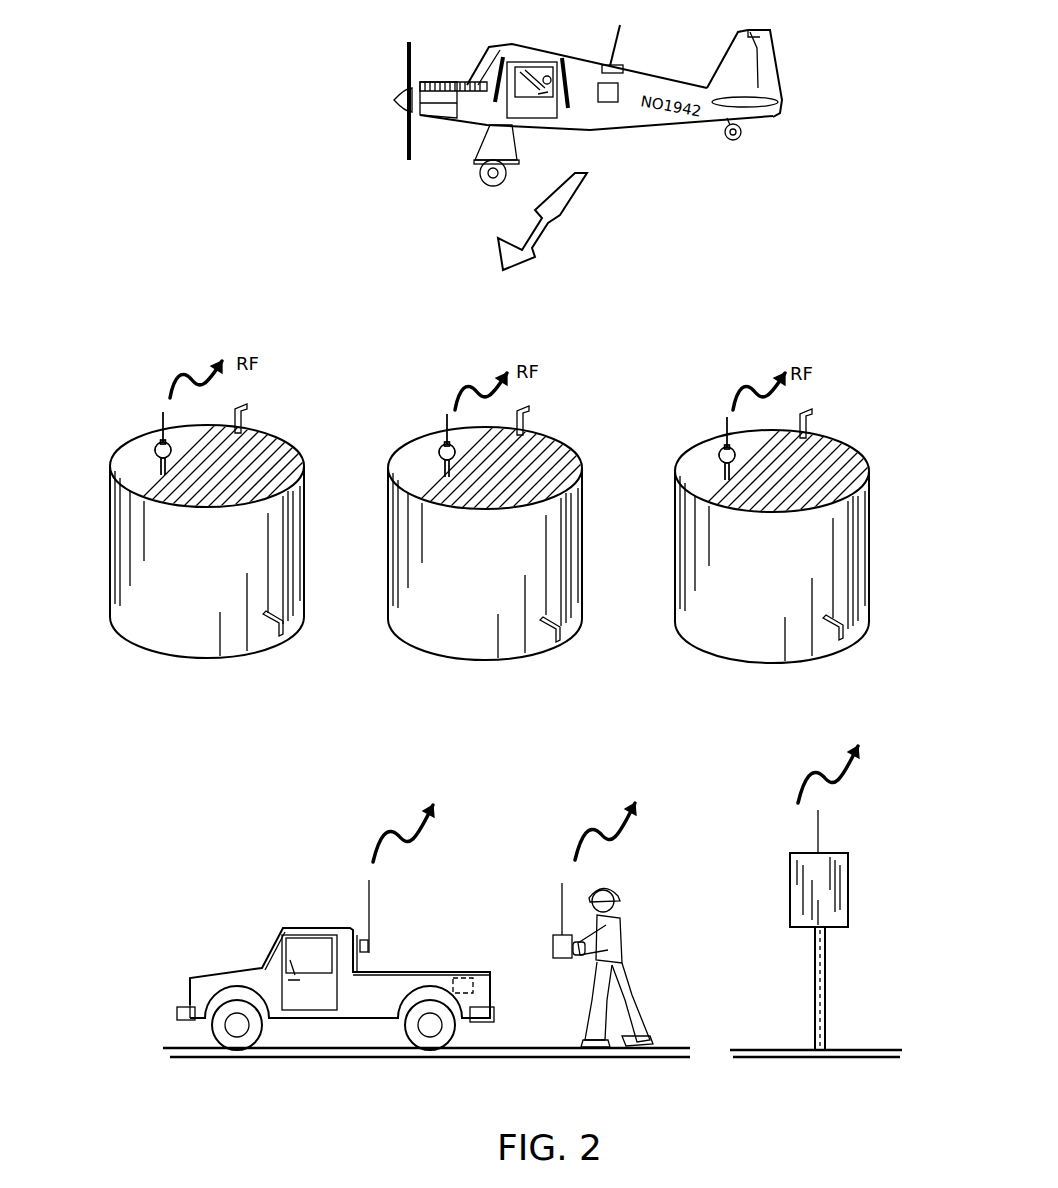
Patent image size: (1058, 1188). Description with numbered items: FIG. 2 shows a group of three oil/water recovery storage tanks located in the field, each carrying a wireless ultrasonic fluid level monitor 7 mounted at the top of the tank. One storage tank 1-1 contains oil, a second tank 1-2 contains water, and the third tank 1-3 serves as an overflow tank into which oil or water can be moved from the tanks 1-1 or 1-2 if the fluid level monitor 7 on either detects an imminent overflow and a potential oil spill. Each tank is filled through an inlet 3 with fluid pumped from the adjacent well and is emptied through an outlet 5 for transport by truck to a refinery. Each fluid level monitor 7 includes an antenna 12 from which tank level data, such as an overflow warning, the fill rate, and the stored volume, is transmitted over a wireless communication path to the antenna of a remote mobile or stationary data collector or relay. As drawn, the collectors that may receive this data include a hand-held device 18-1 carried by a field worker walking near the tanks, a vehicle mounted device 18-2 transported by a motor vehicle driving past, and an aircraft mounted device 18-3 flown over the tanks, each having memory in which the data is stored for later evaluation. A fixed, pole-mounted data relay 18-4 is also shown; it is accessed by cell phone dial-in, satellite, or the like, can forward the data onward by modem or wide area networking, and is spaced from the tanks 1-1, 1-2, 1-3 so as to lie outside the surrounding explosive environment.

The storage tank 1-1 is at (107, 588).
The second tank 1-2 is at (585, 540).
The overflow tank 1-3 is at (870, 513).
The inlet 3 is at (243, 412).
The outlet 5 is at (263, 617).
The wireless fluid level monitor 7 is at (155, 453).
The antenna 12 is at (162, 422).
The hand-held device 18-1 is at (552, 947).
The vehicle mounted device 18-2 is at (472, 992).
The aircraft mounted device 18-3 is at (605, 102).
The fixed data relay 18-4 is at (793, 912).